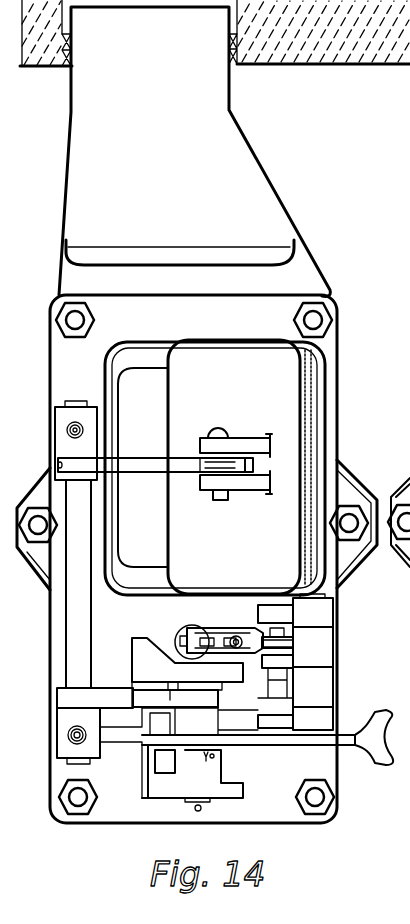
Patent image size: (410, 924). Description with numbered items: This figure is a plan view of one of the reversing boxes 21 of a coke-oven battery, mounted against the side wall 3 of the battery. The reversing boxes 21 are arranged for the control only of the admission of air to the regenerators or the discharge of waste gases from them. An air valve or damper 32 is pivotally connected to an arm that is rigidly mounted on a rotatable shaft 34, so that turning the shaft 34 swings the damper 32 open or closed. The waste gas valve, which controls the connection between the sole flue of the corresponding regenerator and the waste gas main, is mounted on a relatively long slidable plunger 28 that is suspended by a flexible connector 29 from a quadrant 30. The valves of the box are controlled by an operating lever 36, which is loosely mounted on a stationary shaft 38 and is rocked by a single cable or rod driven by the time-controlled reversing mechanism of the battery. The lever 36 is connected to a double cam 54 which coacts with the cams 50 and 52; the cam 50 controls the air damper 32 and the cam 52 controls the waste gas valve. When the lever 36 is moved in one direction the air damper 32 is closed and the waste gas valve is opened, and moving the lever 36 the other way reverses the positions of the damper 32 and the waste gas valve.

The side wall 3 is at (40, 62).
The air valve or damper 32 is at (254, 350).
The rotatable shaft 34 is at (68, 611).
The cam 50 is at (98, 698).
The reversing box 21 is at (62, 777).
The slidable plunger 28 is at (176, 641).
The quadrant 30 is at (205, 630).
The flexible connector 29 is at (233, 637).
The double cam 54 is at (160, 698).
The cam 52 is at (272, 697).
The operating lever 36 is at (370, 740).
The stationary shaft 38 is at (203, 809).